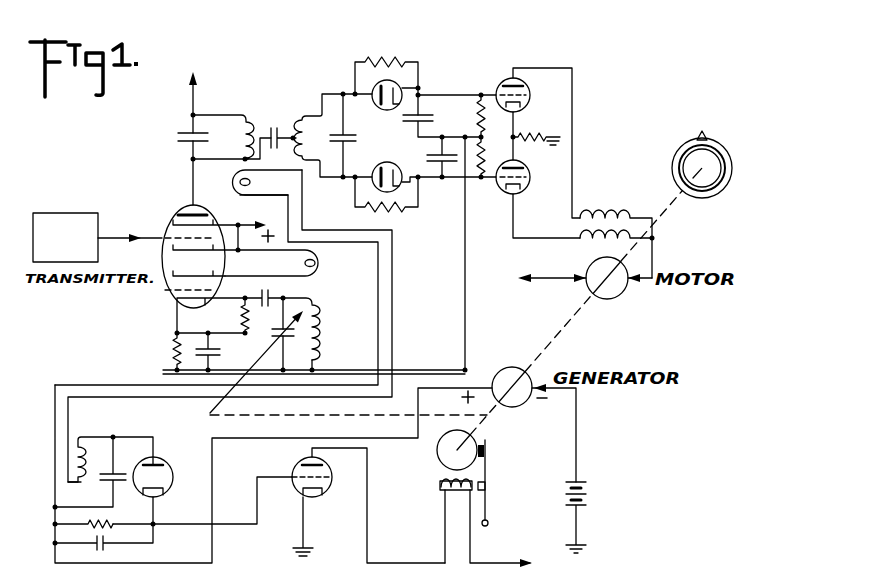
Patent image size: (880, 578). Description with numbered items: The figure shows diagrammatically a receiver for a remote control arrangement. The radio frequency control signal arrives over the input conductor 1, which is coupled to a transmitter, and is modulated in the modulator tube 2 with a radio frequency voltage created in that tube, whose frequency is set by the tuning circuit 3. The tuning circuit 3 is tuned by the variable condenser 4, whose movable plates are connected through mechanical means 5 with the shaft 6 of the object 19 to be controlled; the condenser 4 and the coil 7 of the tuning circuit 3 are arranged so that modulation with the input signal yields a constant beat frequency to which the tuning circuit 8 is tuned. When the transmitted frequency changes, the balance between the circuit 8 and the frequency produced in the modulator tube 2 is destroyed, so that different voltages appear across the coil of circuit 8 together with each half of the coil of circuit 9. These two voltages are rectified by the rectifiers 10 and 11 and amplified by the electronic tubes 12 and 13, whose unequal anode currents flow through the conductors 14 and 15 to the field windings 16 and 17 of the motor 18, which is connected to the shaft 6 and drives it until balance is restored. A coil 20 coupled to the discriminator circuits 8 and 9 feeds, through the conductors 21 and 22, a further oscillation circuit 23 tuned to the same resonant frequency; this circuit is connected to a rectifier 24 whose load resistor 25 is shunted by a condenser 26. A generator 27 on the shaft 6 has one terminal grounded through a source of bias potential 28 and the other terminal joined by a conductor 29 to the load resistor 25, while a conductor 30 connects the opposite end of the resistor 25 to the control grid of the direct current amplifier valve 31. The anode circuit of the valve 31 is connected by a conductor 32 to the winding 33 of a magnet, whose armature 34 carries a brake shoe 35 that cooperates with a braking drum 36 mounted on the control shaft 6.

The input conductor 1 is at (119, 241).
The modulator tube 2 is at (170, 212).
The tuning circuit 3 is at (303, 335).
The variable condenser 4 is at (268, 339).
The mechanical means 5 is at (377, 416).
The shaft 6 is at (563, 336).
The coil 7 is at (322, 338).
The tuning circuit 8 is at (222, 128).
The tuning circuit 9 is at (316, 118).
The rectifier 10 is at (378, 106).
The rectifier 11 is at (378, 167).
The electronic tube 12 is at (500, 80).
The electronic tube 13 is at (501, 193).
The conductor 14 is at (573, 134).
The conductor 15 is at (527, 241).
The field winding 16 is at (601, 216).
The field winding 17 is at (594, 244).
The motor 18 is at (620, 296).
The object to be controlled 19 is at (689, 145).
The coil 20 is at (246, 196).
The conductor 21 is at (94, 386).
The conductor 22 is at (118, 397).
The oscillation circuit 23 is at (97, 450).
The rectifier 24 is at (172, 462).
The load resistor 25 is at (102, 522).
The condenser 26 is at (106, 553).
The generator 27 is at (513, 366).
The source of bias potential 28 is at (559, 495).
The conductor 29 is at (270, 440).
The conductor 30 is at (235, 526).
The direct current amplifier valve 31 is at (327, 496).
The conductor 32 is at (398, 562).
The winding 33 is at (460, 493).
The armature 34 is at (490, 486).
The brake shoe 35 is at (490, 451).
The braking drum 36 is at (437, 457).